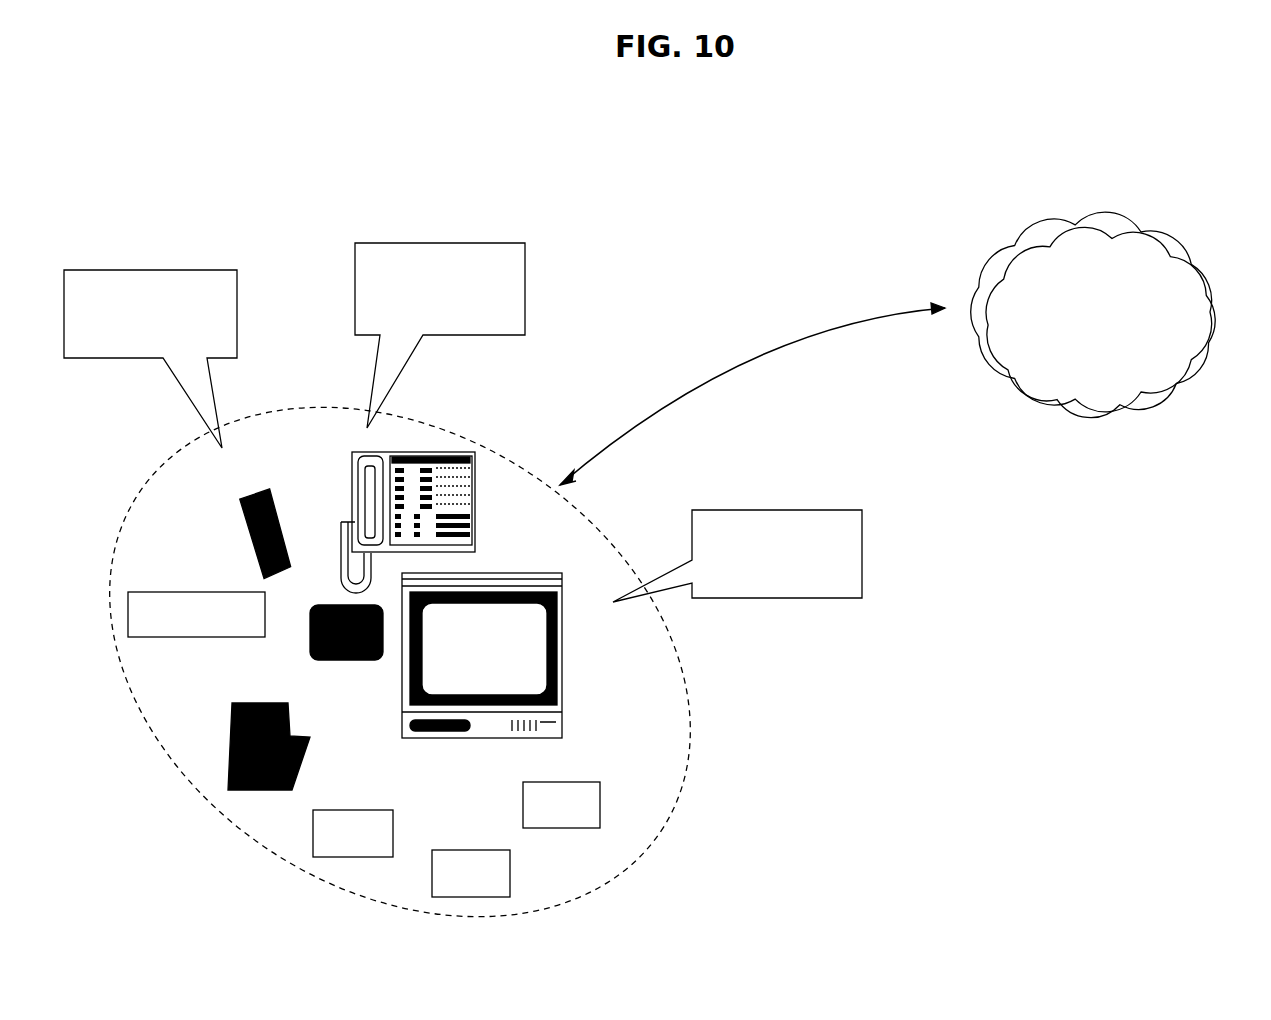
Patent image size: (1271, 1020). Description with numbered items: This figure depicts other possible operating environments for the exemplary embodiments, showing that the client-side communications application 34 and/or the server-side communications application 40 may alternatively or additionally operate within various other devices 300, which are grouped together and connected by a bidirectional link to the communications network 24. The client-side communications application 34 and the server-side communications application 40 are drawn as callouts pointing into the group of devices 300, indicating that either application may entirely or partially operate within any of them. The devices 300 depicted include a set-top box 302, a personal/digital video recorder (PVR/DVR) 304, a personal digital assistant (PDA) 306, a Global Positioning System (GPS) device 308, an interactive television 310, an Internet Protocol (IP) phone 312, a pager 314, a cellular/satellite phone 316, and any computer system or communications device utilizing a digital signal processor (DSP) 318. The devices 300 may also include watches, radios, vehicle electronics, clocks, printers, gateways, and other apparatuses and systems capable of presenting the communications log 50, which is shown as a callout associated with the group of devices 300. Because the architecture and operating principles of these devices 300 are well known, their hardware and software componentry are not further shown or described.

The communications network 24 is at (1005, 222).
The client-side communications application 34 is at (400, 243).
The server-side communications application 40 is at (110, 270).
The communications log 50 is at (820, 598).
The various other devices 300 is at (257, 838).
The set-top box 302 is at (460, 850).
The personal/digital video recorder (PVR/DVR) 304 is at (172, 637).
The personal digital assistant (PDA) 306 is at (230, 729).
The Global Positioning System (GPS) device 308 is at (333, 810).
The interactive television 310 is at (455, 738).
The Internet Protocol (IP) phone 312 is at (350, 460).
The pager 314 is at (353, 660).
The cellular/satellite phone 316 is at (240, 527).
The digital signal processor (DSP) 318 is at (600, 805).